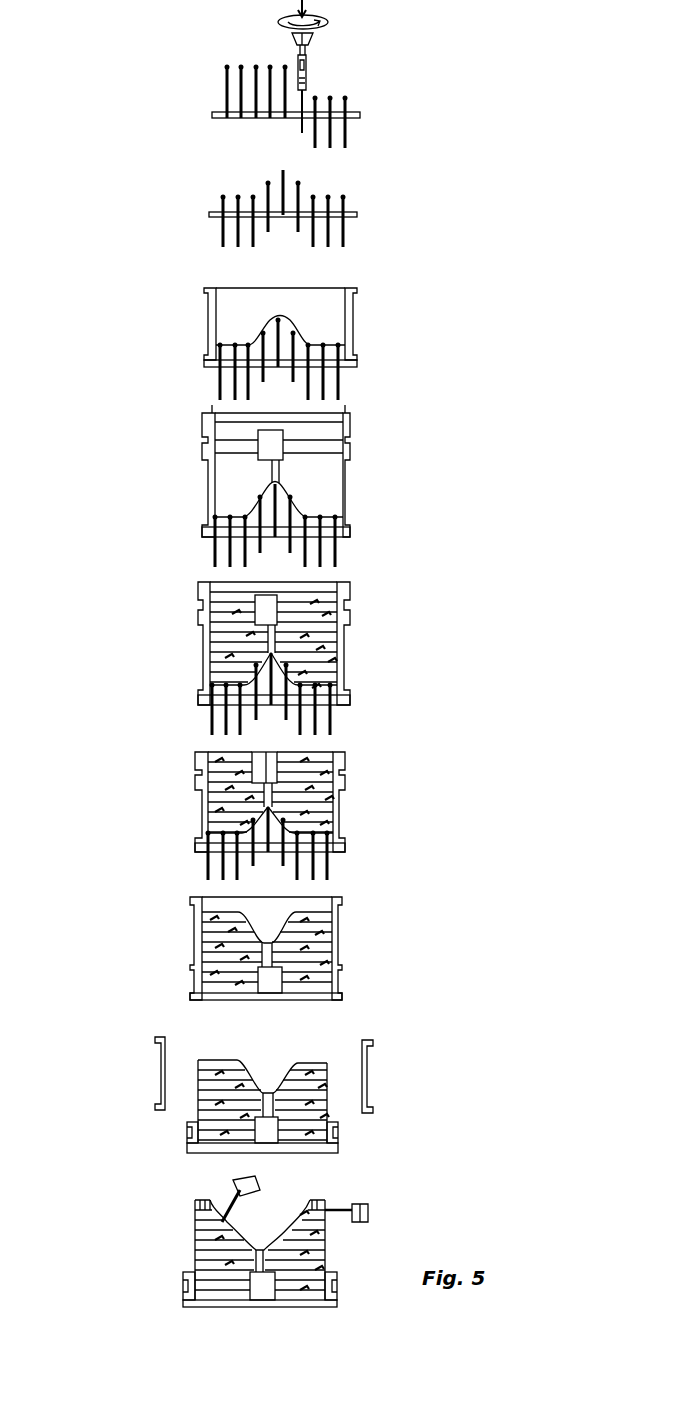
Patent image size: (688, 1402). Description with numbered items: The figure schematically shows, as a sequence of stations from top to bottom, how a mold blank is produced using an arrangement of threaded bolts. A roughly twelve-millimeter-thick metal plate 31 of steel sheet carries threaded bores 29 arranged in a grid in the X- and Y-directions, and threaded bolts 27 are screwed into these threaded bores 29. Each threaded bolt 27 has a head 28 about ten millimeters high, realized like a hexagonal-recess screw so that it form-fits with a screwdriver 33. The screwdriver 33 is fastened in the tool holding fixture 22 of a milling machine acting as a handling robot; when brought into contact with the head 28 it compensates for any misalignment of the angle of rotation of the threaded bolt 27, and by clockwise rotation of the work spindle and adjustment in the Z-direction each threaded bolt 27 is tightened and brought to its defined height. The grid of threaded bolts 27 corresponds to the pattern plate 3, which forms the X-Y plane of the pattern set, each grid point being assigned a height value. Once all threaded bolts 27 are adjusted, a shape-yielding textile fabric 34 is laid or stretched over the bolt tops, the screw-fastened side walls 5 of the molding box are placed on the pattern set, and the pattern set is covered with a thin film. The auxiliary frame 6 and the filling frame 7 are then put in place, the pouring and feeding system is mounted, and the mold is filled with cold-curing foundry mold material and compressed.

The tool holding fixture 22 is at (292, 42).
The head 28 is at (226, 64).
The pattern plate 3 is at (204, 108).
The metal plate 31 is at (212, 113).
The screwdriver 33 is at (309, 70).
The threaded bores 29 is at (350, 110).
The threaded bolts 27 is at (350, 138).
The side walls 5 is at (208, 318).
The shape-yielding textile fabric 34 is at (308, 336).
The auxiliary frame 6 is at (208, 440).
The filling frame 7 is at (355, 422).